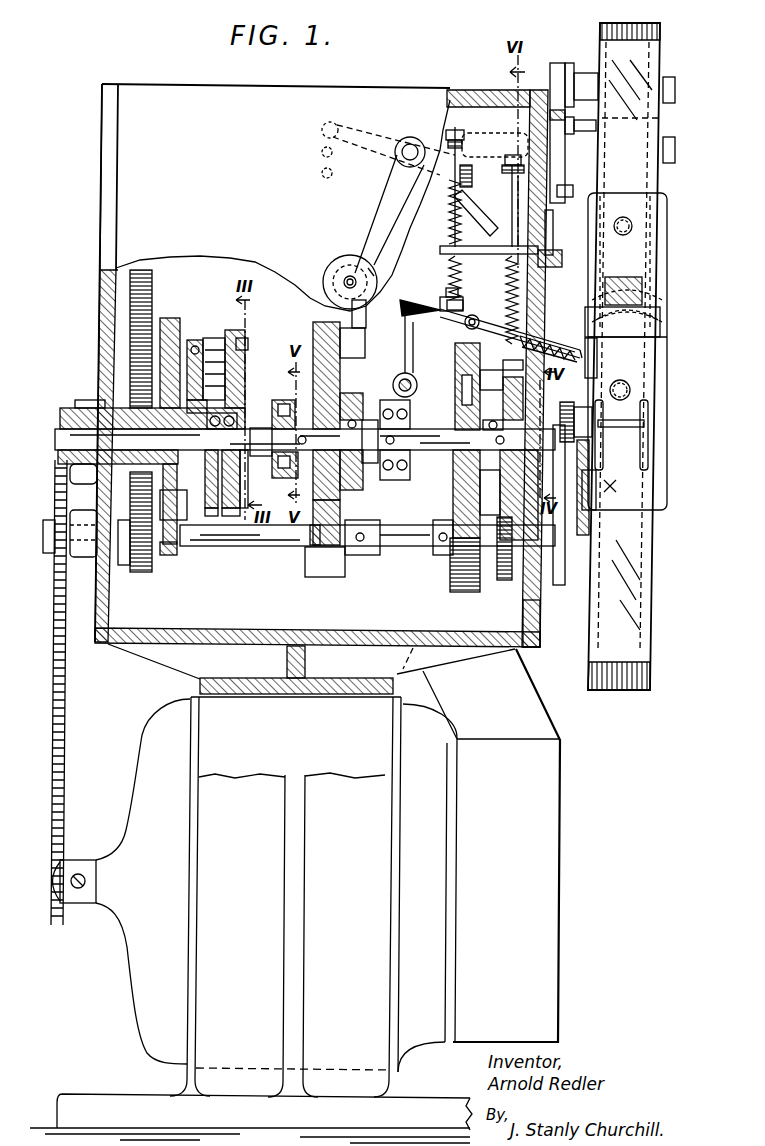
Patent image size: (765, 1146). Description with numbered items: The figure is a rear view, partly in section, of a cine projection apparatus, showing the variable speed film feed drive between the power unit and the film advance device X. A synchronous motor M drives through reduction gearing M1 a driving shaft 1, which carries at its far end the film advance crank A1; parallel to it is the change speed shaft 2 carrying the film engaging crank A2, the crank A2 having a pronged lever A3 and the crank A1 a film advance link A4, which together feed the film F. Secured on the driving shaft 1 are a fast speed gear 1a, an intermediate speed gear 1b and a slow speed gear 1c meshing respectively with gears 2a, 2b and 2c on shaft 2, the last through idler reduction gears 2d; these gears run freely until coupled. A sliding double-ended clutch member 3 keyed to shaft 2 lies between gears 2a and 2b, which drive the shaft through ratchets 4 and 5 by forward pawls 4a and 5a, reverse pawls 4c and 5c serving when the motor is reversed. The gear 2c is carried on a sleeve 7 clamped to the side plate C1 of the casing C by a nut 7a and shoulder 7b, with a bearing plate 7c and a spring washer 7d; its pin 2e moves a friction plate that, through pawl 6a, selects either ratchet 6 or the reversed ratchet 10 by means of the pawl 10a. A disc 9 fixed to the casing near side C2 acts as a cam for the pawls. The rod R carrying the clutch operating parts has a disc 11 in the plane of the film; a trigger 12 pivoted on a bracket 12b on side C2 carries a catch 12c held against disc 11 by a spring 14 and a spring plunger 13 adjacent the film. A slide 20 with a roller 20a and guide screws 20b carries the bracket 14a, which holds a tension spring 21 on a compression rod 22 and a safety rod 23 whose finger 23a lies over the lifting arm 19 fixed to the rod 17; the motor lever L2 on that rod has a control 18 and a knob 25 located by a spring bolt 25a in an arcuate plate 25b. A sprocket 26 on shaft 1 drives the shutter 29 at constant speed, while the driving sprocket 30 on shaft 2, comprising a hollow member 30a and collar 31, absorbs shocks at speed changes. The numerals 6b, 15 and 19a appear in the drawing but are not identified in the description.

The driving shaft 1 is at (50, 540).
The fast speed gear 1a is at (452, 578).
The intermediate speed gear 1b is at (322, 582).
The slow speed gear 1c is at (130, 568).
The change speed shaft 2 is at (68, 438).
The gear 2a is at (456, 492).
The gear 2b is at (305, 548).
The gear 2c is at (152, 566).
The idler reduction gears 2d is at (153, 286).
The pin 2e is at (190, 515).
The sliding double-ended clutch member 3 is at (400, 482).
The ratchet 4 is at (466, 390).
The forward drive pawl 4a is at (460, 360).
The reverse driving pawl 4c is at (462, 508).
The ratchet 5 is at (364, 372).
The forward pawl 5a is at (370, 340).
The reverse driving pawl 5c is at (380, 548).
The ratchet 6 is at (236, 386).
The pawl 6a is at (242, 362).
The clutch sleeve 6b is at (200, 350).
The sleeve 7 is at (108, 408).
The nut 7a is at (80, 405).
The shoulder 7b is at (75, 476).
The bearing plate 7c is at (210, 518).
The spring washer 7d is at (72, 510).
The disc 9 is at (566, 386).
The second ratchet 10 is at (215, 516).
The pawl 10a is at (212, 340).
The disc 11 is at (360, 310).
The trigger device 12 is at (464, 318).
The bracket 12b is at (490, 304).
The catch member 12c is at (446, 300).
The spring plunger 13 is at (592, 346).
The spring 14 is at (450, 282).
The bracket 14a is at (506, 292).
The pointer 15 is at (404, 306).
The rod 17 is at (410, 137).
The lever 18 is at (340, 127).
The lifting arm 19 is at (453, 200).
The cam blade 19a is at (466, 222).
The slide-member 20 is at (558, 68).
The roller 20a is at (660, 70).
The guide screws 20b is at (583, 130).
The tension spring 21 is at (536, 340).
The compression rod 22 is at (510, 192).
The trigger safety rod 23 is at (452, 248).
The adjustable finger 23a is at (458, 150).
The knob 25 is at (346, 256).
The spring bolt 25a is at (345, 280).
The arcuate plate 25b is at (387, 266).
The sprocket 26 is at (500, 584).
The shutter 29 is at (646, 330).
The driving sprocket 30 is at (283, 480).
The hollow sprocket member 30a is at (278, 402).
The collar 31 is at (290, 494).
The crank A1 is at (560, 586).
The crank A2 is at (582, 400).
The prongs A3 is at (602, 426).
The film advance link A4 is at (600, 512).
The casing C is at (258, 630).
The side plate C1 is at (100, 288).
The side casing C2 is at (540, 618).
The film F is at (612, 690).
The second lever L2 is at (380, 197).
The motor M is at (295, 896).
The reduction gearing M1 is at (66, 688).
The rod R is at (418, 382).
The film advance device X is at (607, 478).